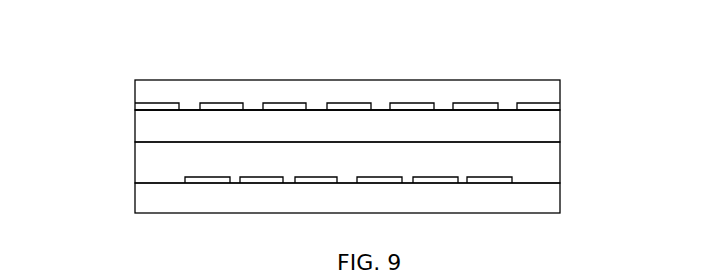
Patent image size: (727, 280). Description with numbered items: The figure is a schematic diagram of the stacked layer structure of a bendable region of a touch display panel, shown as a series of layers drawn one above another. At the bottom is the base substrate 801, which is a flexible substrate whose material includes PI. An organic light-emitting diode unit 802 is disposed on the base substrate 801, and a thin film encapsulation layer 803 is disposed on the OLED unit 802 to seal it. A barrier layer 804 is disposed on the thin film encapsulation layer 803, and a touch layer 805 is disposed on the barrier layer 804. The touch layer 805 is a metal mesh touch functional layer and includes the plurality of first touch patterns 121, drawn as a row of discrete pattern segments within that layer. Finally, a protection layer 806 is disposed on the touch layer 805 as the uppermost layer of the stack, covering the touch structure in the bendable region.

The base substrate 801 is at (533, 205).
The organic light-emitting diode unit 802 is at (497, 177).
The thin film encapsulation layer 803 is at (143, 165).
The barrier layer 804 is at (148, 121).
The touch layer 805 is at (396, 87).
The first touch patterns 121 is at (533, 108).
The protection layer 806 is at (185, 88).